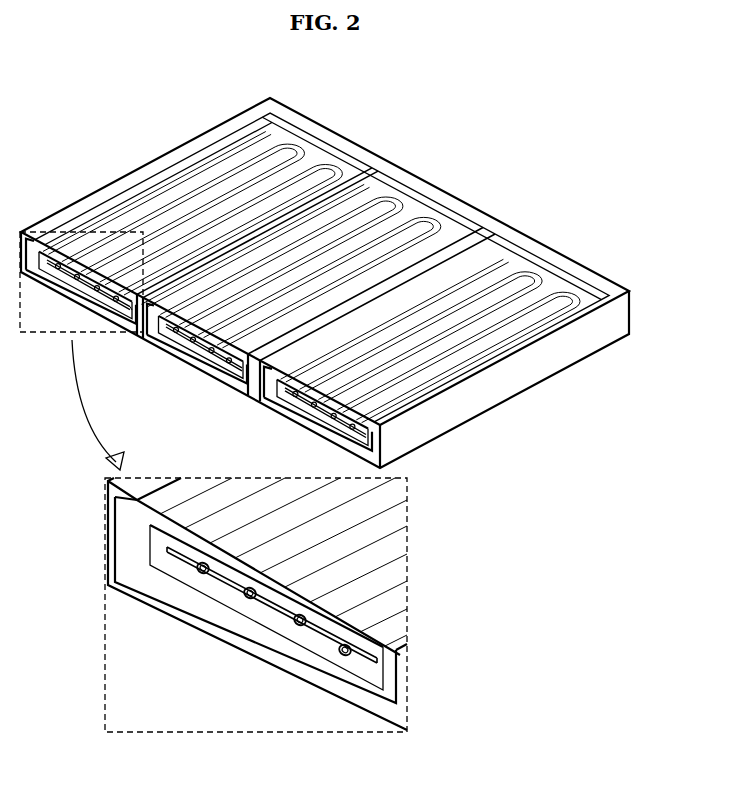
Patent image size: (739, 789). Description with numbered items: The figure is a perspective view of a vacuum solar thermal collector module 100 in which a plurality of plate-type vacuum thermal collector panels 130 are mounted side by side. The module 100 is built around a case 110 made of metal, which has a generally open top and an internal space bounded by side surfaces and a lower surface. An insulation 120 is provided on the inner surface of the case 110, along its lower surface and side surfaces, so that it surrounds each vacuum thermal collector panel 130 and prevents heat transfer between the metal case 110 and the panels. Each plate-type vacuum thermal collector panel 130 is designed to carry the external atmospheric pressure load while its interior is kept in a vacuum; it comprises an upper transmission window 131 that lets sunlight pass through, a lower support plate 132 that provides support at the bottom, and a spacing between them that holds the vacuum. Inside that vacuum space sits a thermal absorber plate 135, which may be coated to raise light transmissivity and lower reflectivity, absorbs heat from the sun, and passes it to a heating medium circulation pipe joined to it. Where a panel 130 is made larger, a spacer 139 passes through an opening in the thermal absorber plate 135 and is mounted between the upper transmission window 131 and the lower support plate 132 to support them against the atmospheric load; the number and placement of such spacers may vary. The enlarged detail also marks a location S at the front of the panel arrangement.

The vacuum solar thermal collector module 100 is at (152, 116).
The case 110 is at (511, 384).
The insulation 120 is at (133, 332).
The plate-type vacuum thermal collector panel 130 is at (208, 182).
The upper transmission window 131 is at (80, 245).
The lower support plate 132 is at (212, 350).
The thermal absorber plate 135 is at (68, 272).
The spacer 139 is at (160, 346).
The sealing space S is at (186, 346).